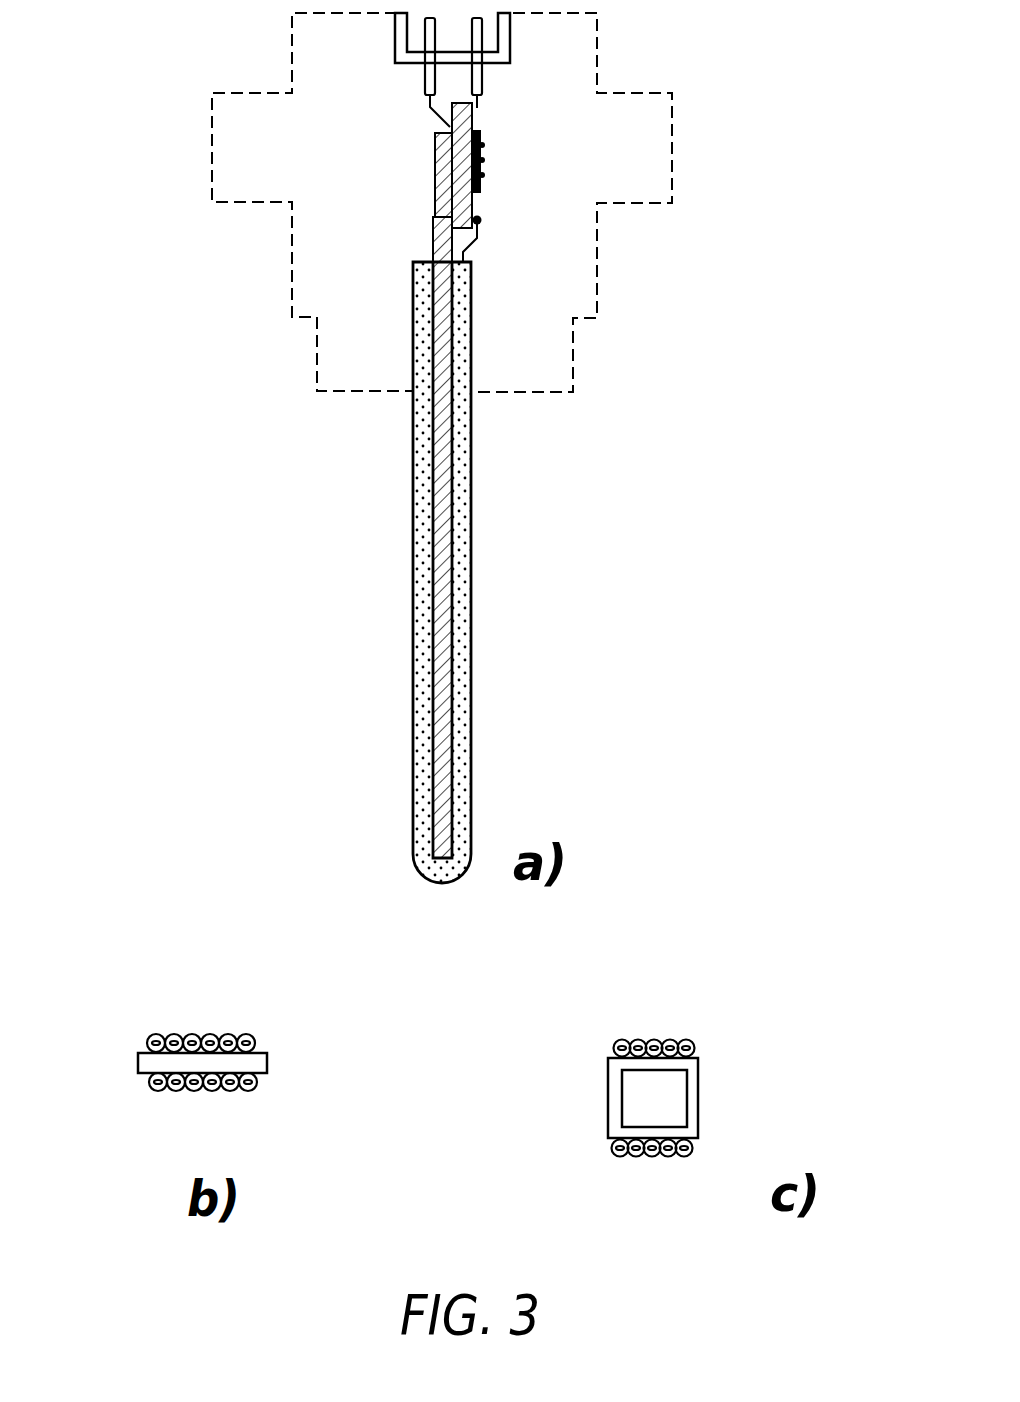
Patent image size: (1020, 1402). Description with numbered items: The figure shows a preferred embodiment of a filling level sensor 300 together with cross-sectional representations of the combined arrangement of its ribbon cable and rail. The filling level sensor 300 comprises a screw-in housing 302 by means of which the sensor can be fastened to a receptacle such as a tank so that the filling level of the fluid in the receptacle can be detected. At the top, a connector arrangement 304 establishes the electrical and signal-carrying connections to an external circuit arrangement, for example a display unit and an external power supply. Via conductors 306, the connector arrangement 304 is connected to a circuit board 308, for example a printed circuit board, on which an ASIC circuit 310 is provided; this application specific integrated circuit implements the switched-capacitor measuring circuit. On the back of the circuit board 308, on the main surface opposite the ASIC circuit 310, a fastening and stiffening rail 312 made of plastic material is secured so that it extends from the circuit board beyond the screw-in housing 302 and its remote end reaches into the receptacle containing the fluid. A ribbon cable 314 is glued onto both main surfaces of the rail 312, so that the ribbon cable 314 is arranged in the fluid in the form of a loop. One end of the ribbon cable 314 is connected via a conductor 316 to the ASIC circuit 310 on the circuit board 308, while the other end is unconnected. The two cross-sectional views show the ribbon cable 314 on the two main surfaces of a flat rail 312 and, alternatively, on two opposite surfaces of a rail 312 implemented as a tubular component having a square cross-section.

The filling level sensor 300 is at (376, 686).
The screw-in housing 302 is at (680, 183).
The connector arrangement 304 is at (493, 27).
The conductors 306 is at (428, 108).
The circuit board 308 is at (433, 217).
The ASIC circuit 310 is at (474, 192).
The fastening and stiffening rail 312 is at (433, 322).
The ribbon cable 314 is at (471, 623).
The conductor 316 is at (478, 236).